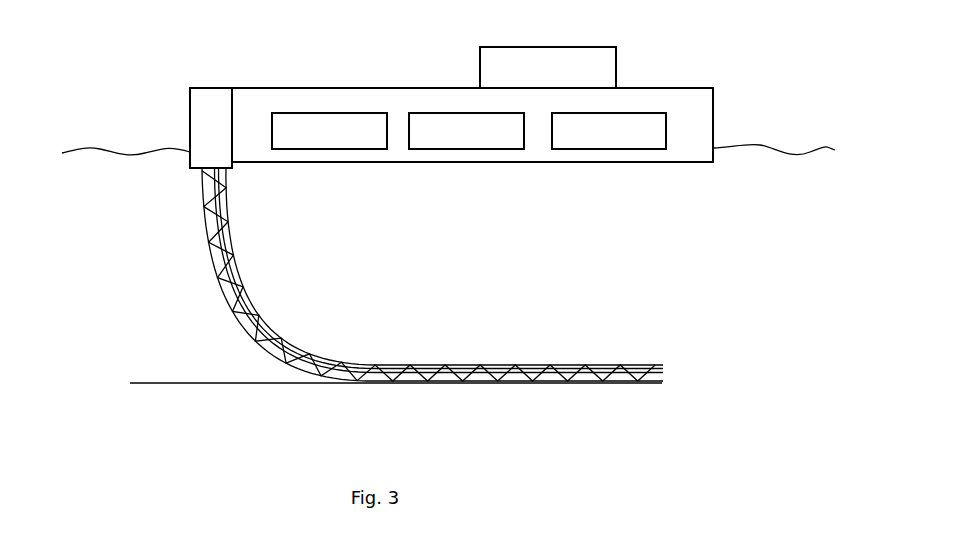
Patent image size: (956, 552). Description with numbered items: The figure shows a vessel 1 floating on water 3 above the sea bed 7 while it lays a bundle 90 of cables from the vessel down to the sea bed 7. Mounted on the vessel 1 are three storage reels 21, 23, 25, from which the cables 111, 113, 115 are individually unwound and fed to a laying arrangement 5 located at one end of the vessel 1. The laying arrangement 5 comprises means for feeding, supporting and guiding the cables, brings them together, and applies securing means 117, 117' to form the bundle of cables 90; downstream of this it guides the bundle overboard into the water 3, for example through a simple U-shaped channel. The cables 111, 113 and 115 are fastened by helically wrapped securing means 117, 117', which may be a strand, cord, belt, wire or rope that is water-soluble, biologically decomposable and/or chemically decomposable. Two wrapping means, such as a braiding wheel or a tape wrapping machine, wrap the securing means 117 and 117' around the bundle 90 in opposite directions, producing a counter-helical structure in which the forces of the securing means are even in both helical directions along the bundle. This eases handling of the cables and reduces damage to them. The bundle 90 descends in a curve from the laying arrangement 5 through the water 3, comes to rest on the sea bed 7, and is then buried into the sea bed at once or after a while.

The vessel 1 is at (634, 72).
The water 3 is at (762, 132).
The laying arrangement 5 is at (207, 103).
The sea bed 7 is at (168, 372).
The storage reel 21 is at (333, 138).
The storage reel 23 is at (472, 133).
The storage reel 25 is at (613, 133).
The bundle of cables 90 is at (404, 274).
The cable 111 is at (284, 334).
The cable 113 is at (323, 365).
The cable 115 is at (392, 365).
The securing means 117 is at (444, 322).
The securing means 117' is at (194, 229).